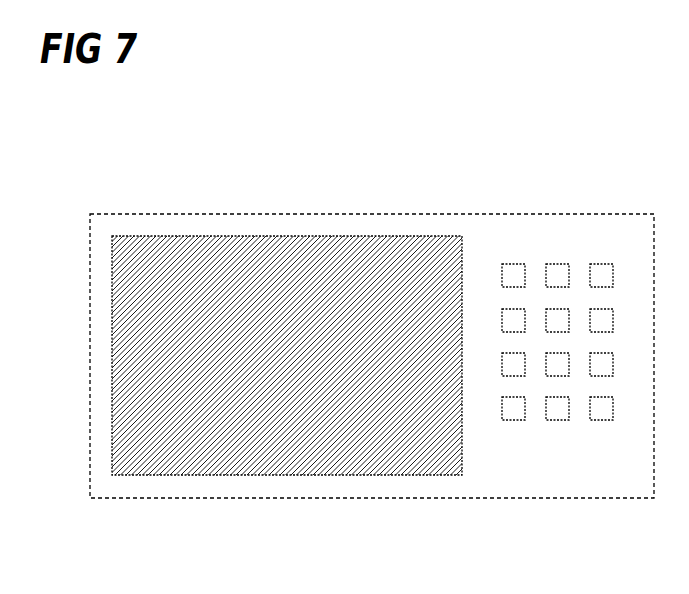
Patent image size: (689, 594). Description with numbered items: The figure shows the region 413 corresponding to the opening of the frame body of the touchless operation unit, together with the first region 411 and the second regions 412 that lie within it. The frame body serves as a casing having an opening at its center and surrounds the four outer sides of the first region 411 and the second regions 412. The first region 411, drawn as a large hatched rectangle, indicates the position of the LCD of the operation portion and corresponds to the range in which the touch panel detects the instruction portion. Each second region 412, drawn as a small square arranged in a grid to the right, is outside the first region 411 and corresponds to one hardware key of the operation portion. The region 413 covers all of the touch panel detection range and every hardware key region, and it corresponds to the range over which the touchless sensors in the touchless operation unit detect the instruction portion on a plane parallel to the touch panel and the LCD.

The first region 411 is at (265, 237).
The second region 412 is at (516, 266).
The region corresponding to the opening of the frame body 413 is at (420, 214).